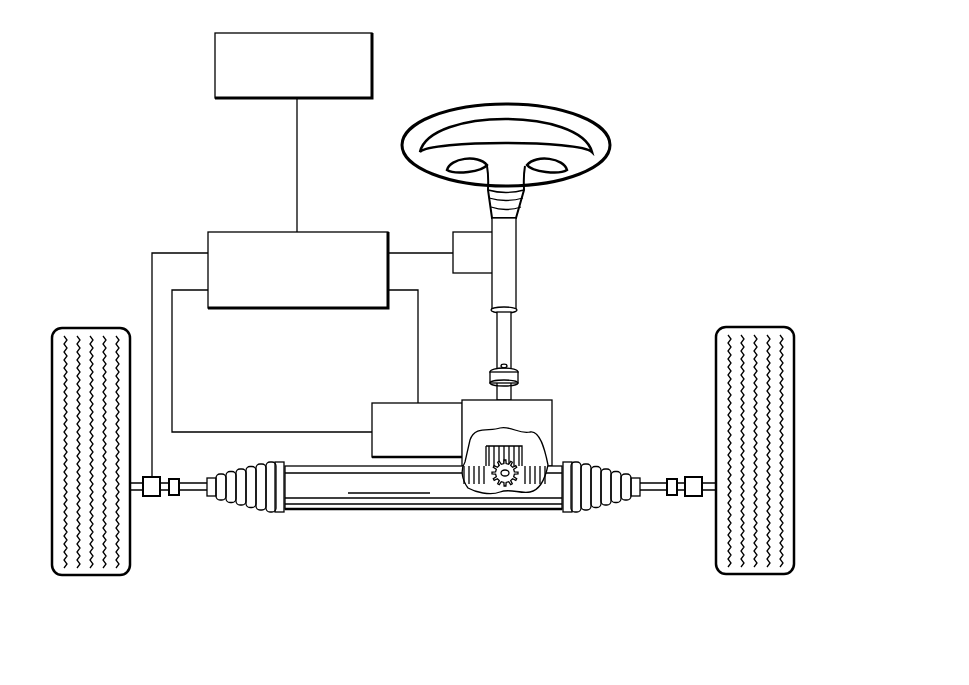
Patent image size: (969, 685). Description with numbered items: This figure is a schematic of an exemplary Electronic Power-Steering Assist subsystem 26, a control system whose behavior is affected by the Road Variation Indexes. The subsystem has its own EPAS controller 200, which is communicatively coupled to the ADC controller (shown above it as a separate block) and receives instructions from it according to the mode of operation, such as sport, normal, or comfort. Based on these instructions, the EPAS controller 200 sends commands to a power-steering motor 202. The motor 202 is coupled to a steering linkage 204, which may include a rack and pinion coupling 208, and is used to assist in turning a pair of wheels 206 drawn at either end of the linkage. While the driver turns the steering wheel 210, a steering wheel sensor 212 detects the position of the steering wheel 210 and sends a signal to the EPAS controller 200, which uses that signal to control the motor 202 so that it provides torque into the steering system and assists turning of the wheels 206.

The Electronic Power-Steering Assist (EPAS) subsystem 26 is at (126, 62).
The EPAS controller 200 is at (206, 240).
The power-steering motor 202 is at (372, 418).
The steering linkage 204 is at (340, 507).
The wheels 206 is at (92, 326).
The rack and pinion coupling 208 is at (495, 492).
The steering wheel 210 is at (605, 172).
The steering wheel sensor 212 is at (452, 243).